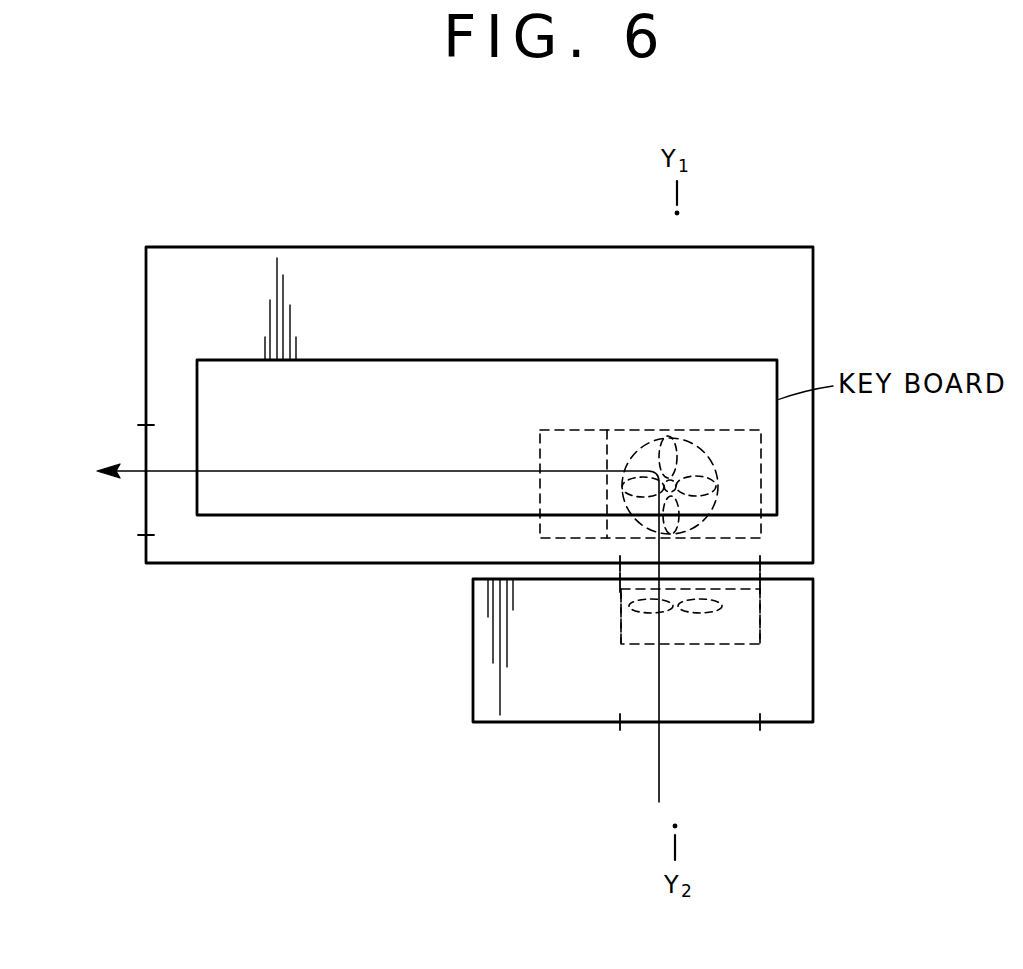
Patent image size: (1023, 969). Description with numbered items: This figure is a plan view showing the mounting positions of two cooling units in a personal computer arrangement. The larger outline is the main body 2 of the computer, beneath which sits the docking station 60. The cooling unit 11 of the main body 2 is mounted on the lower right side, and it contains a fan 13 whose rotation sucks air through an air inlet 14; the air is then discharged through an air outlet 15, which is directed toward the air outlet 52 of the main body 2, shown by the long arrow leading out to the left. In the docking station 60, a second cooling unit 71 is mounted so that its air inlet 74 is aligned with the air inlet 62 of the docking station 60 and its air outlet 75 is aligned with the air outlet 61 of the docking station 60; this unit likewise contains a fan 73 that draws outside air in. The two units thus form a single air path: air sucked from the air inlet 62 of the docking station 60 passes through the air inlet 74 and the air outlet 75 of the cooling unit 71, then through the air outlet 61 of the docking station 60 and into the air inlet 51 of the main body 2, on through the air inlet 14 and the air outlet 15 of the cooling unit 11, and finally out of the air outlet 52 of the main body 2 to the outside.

The main body 2 is at (815, 295).
The cooling unit 11 is at (568, 428).
The fan 13 is at (667, 443).
The air inlet 14 is at (718, 476).
The air outlet 15 is at (540, 488).
The air inlet 51 is at (700, 565).
The air outlet 52 is at (145, 508).
The docking station 60 is at (537, 722).
The air outlet 61 is at (732, 580).
The air inlet 62 is at (720, 722).
The cooling unit 71 is at (620, 622).
The fan 73 is at (620, 598).
The air inlet 74 is at (730, 645).
The air outlet 75 is at (737, 590).